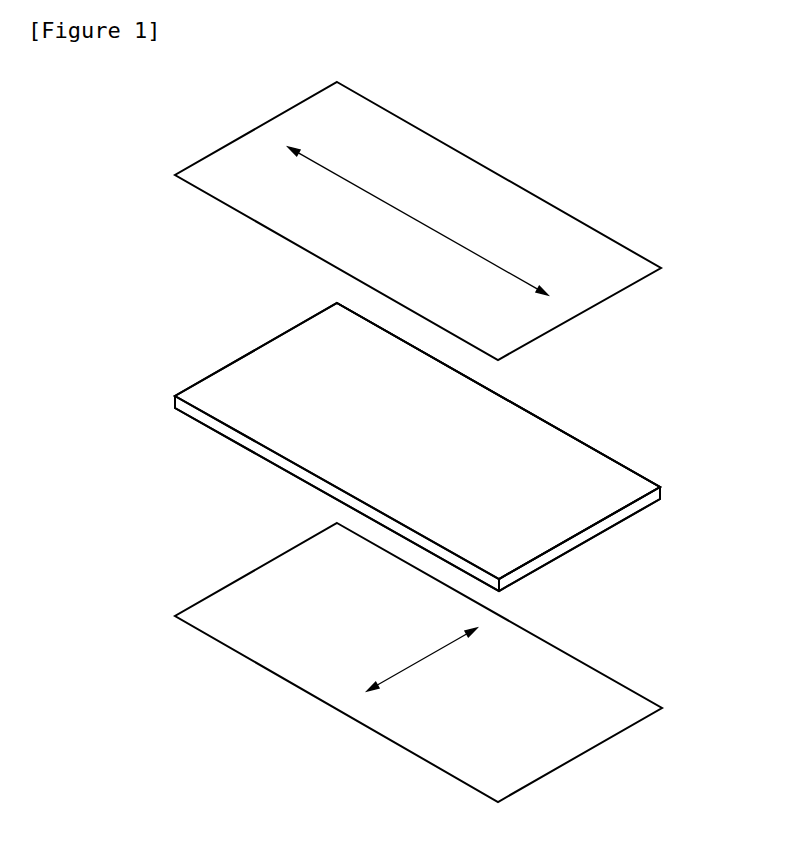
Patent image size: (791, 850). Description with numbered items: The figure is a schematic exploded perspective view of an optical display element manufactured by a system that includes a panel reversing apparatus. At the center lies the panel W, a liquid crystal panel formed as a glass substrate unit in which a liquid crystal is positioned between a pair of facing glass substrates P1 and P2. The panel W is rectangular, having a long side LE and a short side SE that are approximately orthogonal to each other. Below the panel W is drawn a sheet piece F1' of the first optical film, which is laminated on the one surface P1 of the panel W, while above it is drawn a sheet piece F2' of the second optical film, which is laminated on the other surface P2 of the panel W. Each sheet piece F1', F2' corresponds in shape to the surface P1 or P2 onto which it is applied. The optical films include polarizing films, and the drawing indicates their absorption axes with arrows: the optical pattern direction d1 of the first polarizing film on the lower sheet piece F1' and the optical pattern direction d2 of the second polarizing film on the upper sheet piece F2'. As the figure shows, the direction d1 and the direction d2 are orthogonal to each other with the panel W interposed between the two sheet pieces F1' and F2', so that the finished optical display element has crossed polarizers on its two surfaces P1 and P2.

The sheet piece of the second optical film F2' is at (385, 221).
The optical pattern direction of the second polarizing film d2 is at (418, 221).
The panel W is at (72, 353).
The other surface of the panel P2 is at (207, 392).
The one surface of the panel P1 is at (200, 423).
The long side LE is at (607, 455).
The short side SE is at (558, 547).
The sheet piece of the first optical film F1' is at (406, 662).
The optical pattern direction of the first polarizing film d1 is at (422, 659).